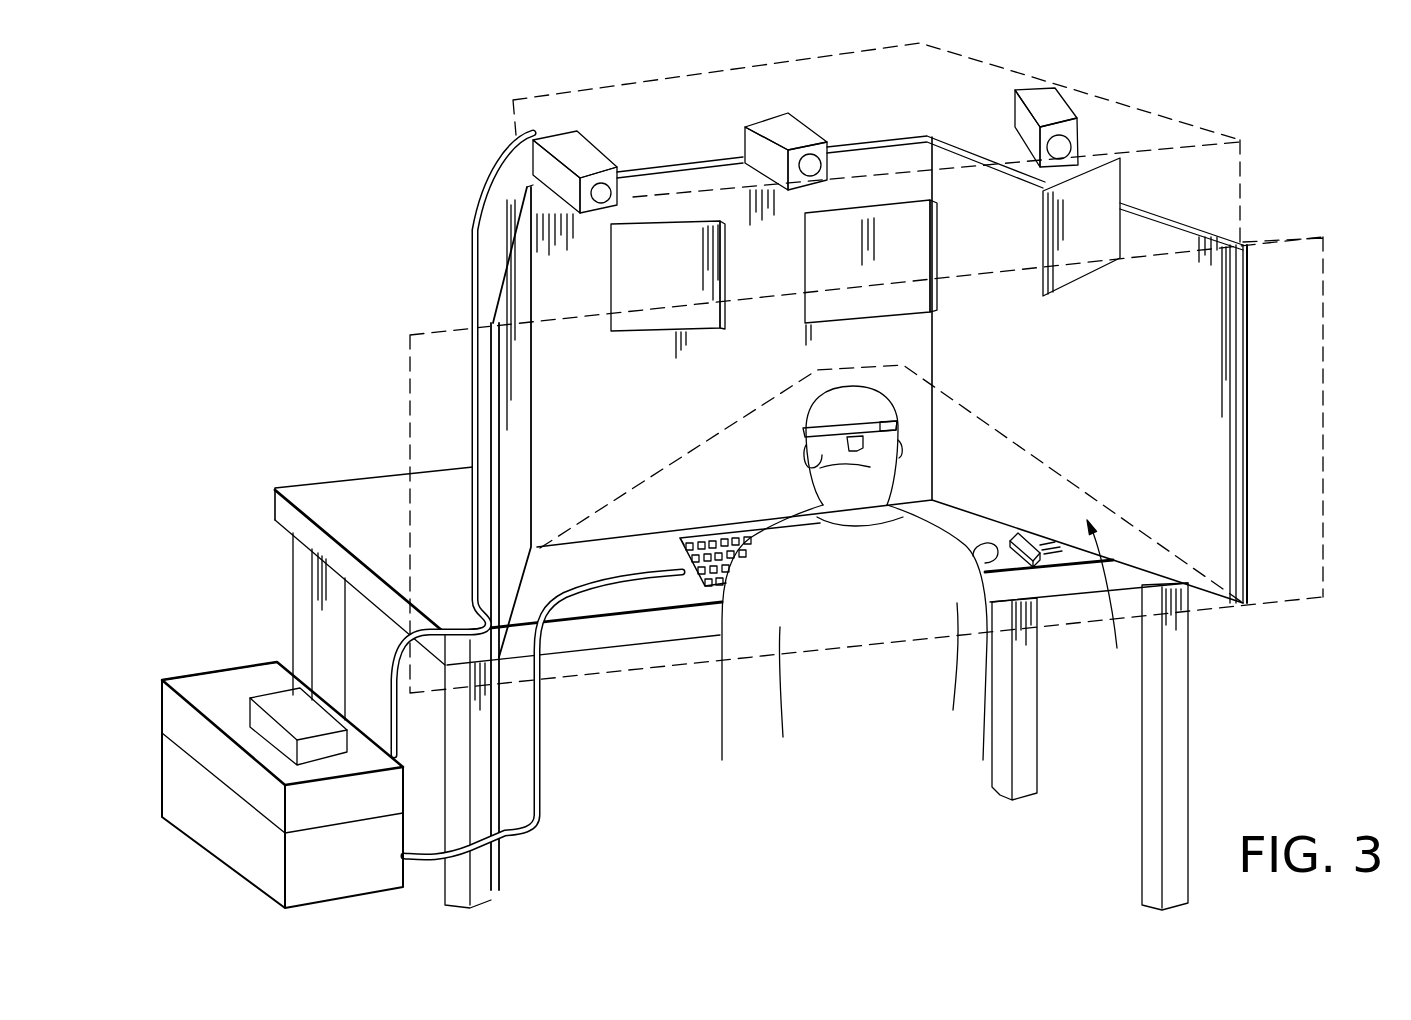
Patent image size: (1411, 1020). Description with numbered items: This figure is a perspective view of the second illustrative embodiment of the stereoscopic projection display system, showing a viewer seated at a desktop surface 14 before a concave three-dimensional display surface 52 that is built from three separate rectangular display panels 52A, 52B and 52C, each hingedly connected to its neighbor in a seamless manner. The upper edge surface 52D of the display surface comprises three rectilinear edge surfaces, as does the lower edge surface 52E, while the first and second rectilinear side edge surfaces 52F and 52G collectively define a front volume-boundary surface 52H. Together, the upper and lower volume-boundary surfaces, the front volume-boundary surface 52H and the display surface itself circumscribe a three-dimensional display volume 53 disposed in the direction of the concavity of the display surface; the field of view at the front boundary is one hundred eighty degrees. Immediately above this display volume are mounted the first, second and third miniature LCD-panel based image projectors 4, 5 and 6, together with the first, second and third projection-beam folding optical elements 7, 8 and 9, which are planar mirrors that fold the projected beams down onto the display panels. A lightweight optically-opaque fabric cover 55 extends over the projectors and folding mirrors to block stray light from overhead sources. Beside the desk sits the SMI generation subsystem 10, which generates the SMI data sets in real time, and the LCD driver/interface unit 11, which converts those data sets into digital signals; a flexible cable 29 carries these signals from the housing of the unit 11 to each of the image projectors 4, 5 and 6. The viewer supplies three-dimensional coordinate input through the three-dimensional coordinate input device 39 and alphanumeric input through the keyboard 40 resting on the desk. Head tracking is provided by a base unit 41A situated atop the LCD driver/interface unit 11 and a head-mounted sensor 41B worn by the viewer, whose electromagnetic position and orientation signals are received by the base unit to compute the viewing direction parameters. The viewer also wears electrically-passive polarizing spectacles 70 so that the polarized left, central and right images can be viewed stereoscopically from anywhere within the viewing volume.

The image projector 4 is at (583, 150).
The image projector 5 is at (797, 123).
The image projector 6 is at (1058, 103).
The projection-beam folding optical element 7 is at (613, 278).
The projection-beam folding optical element 8 is at (932, 236).
The projection-beam folding optical element 9 is at (1105, 193).
The SMI generation subsystem 10 is at (172, 808).
The LCD driver/interface unit 11 is at (170, 705).
The desktop surface 14 is at (332, 487).
The flexible cable 29 is at (472, 260).
The 3-D coordinate input device 39 is at (1040, 562).
The keyboard 40 is at (690, 592).
The base unit 41A is at (282, 705).
The head-mounted sensor 41B is at (887, 428).
The three-dimensional display surface 52 is at (1220, 280).
The display panel 52A is at (508, 398).
The display panel 52B is at (717, 205).
The display panel 52C is at (1223, 473).
The upper edge surface 52D is at (890, 140).
The lower edge surface 52E is at (583, 538).
The first rectilinear edge surface 52F is at (487, 442).
The second rectilinear edge surface 52G is at (1247, 363).
The front volume-boundary surface 52H is at (1323, 400).
The three-dimensional display volume 53 is at (1112, 604).
The fabric cover 55 is at (1245, 185).
The polarizing spectacles 70 is at (803, 447).